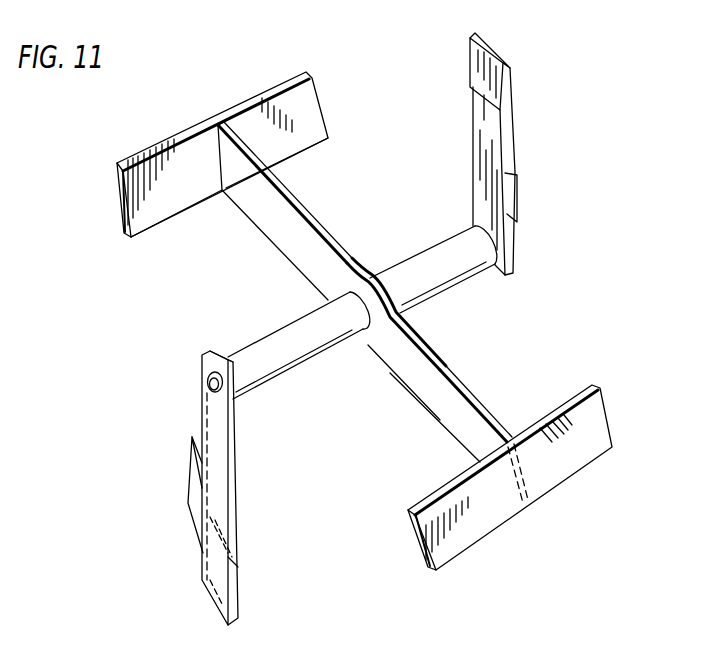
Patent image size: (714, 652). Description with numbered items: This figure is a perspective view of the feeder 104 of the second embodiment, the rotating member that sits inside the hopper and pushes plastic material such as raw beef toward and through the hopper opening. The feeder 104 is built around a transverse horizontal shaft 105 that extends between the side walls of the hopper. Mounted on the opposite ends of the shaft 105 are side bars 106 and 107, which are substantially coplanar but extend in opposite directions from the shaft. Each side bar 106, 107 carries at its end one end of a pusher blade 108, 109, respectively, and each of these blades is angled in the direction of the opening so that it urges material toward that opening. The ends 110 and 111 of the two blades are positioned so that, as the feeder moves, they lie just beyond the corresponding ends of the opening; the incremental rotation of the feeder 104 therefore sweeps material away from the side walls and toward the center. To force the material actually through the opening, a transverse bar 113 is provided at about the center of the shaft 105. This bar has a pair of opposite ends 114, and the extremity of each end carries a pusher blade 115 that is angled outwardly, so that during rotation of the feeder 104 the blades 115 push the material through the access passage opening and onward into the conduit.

The feeder 104 is at (407, 258).
The transverse horizontal shaft 105 is at (280, 333).
The side bar 106 is at (477, 155).
The side bar 107 is at (223, 428).
The pusher blade 108 is at (512, 138).
The pusher blade 109 is at (195, 505).
The end of pusher blade 110 is at (518, 195).
The end of pusher blade 111 is at (188, 463).
The transverse bar 113 is at (437, 331).
The opposite ends of transverse bar 114 is at (277, 204).
The pusher blade 115 is at (283, 102).